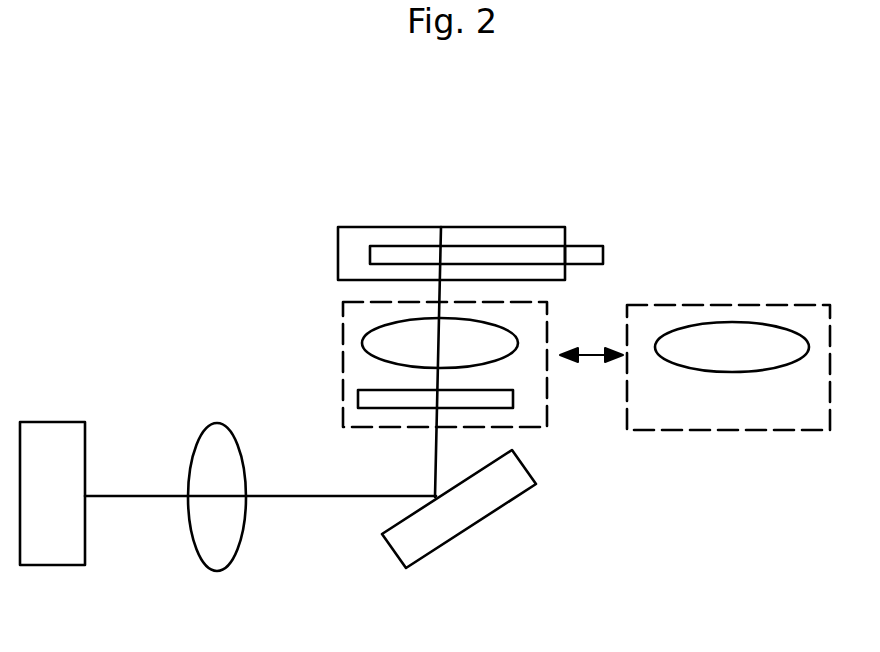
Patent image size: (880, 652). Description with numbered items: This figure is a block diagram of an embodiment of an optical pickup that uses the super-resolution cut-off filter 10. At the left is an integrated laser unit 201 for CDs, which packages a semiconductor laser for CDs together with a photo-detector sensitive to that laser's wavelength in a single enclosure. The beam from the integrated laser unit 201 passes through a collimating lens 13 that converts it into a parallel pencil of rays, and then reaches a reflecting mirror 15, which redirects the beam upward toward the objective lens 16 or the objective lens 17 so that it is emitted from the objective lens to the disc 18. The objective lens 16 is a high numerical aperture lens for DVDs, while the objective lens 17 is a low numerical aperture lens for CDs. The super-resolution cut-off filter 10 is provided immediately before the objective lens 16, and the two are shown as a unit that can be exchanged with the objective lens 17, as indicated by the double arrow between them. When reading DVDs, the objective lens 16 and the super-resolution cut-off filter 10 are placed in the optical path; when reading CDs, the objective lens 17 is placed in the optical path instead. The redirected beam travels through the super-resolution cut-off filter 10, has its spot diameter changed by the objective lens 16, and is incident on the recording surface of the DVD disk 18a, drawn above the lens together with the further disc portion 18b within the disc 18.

The super-resolution cut-off filter 10 is at (523, 407).
The collimating lens 13 is at (222, 424).
The reflecting mirror 15 is at (498, 508).
The objective lens 16 is at (365, 335).
The objective lens 17 is at (745, 322).
The disc 18 is at (407, 220).
The DVD disk 18a is at (592, 258).
The holder slide member 18b is at (458, 227).
The integrated laser unit 201 is at (66, 420).